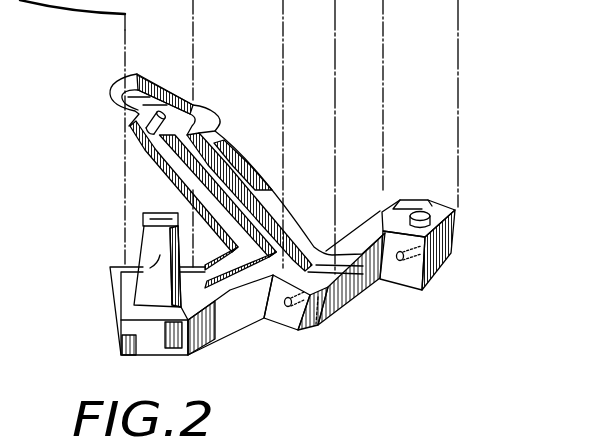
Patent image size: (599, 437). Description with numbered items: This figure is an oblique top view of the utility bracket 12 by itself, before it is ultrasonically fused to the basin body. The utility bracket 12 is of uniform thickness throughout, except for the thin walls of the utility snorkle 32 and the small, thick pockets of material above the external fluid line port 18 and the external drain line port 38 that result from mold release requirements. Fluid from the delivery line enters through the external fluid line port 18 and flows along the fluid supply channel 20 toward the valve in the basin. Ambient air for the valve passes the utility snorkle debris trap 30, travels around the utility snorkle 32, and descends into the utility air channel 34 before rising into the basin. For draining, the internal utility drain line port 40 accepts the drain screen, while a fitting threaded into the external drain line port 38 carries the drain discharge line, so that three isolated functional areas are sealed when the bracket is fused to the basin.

The utility bracket 12 is at (330, 332).
The external fluid line port 18 is at (262, 320).
The fluid supply channel 20 is at (137, 74).
The utility snorkle debris trap 30 is at (165, 213).
The utility snorkle 32 is at (116, 267).
The utility air channel 34 is at (129, 126).
The external drain line port 38 is at (388, 270).
The internal utility drain line port 40 is at (428, 201).